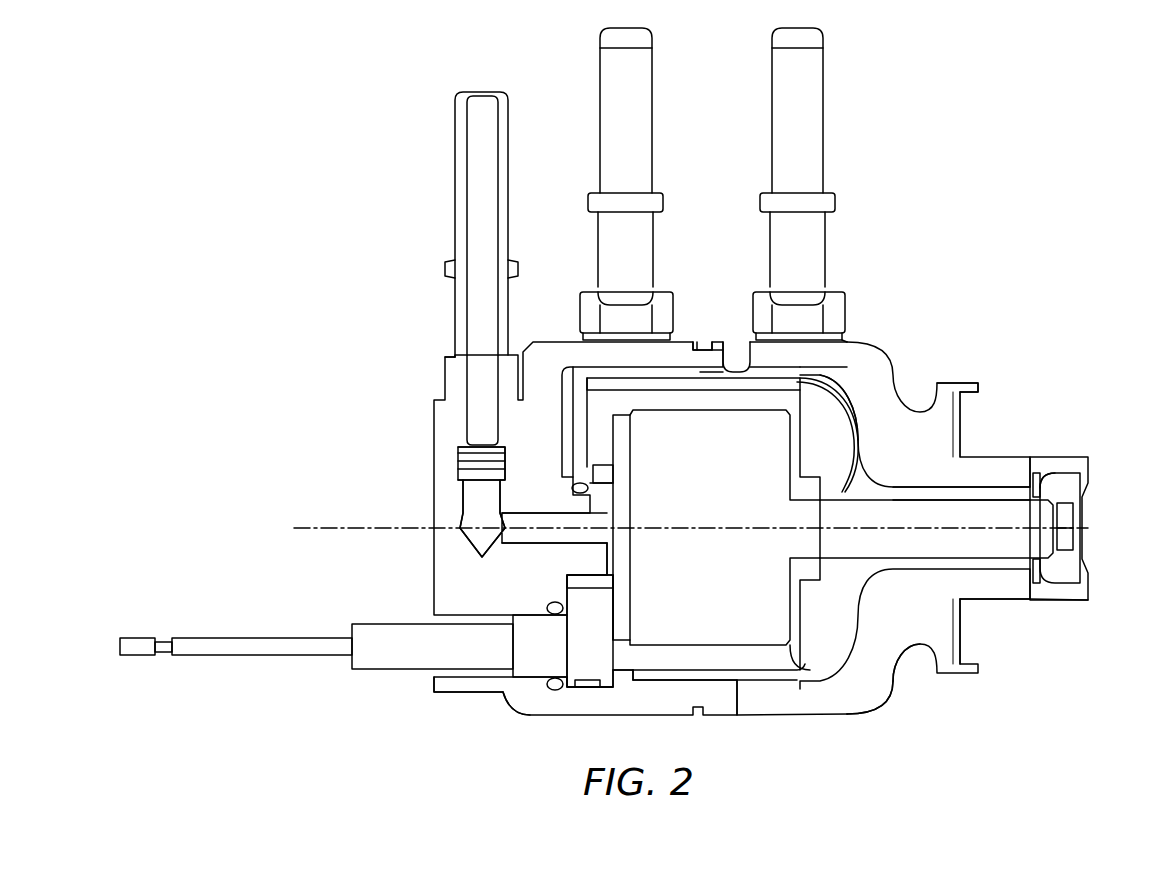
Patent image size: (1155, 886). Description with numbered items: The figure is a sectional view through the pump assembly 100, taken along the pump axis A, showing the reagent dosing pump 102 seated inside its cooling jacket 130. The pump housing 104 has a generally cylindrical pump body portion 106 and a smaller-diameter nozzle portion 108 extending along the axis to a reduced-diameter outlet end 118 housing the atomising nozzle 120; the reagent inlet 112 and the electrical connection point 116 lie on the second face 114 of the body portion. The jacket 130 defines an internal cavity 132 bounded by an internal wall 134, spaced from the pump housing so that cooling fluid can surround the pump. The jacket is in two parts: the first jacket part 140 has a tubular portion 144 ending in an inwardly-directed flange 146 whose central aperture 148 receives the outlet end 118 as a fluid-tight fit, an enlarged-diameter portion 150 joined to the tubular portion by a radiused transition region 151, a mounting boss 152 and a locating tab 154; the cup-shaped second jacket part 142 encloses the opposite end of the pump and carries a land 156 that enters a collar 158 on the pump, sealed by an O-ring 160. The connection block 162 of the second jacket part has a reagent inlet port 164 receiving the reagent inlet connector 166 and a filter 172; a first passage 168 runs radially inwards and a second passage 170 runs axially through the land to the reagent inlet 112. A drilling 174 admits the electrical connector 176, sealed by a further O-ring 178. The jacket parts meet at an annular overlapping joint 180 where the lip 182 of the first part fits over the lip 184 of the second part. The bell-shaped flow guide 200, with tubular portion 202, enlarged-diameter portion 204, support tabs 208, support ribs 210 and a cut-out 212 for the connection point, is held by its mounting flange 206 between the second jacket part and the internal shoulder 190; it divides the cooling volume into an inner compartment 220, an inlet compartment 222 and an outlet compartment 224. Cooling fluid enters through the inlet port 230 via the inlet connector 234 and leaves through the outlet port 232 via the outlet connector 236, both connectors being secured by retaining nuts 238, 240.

The pump assembly 100 is at (336, 182).
The reagent dosing pump 102 is at (830, 683).
The pump housing 104 is at (768, 593).
The pump body portion 106 is at (700, 658).
The nozzle portion 108 is at (987, 562).
The reagent inlet 112 is at (592, 535).
The second face 114 is at (615, 612).
The electrical connection point 116 is at (590, 668).
The outlet end 118 is at (1068, 511).
The atomising nozzle 120 is at (1068, 540).
The jacket 130 is at (915, 388).
The internal cavity 132 is at (862, 690).
The internal wall 134 is at (790, 688).
The first jacket part 140 is at (942, 622).
The second jacket part 142 is at (495, 695).
The tubular portion 144 is at (1020, 592).
The inwardly-directed flange 146 is at (1083, 566).
The central aperture 148 is at (1060, 500).
The enlarged-diameter portion 150 is at (802, 700).
The radiused transition region 151 is at (926, 660).
The mounting boss 152 is at (950, 420).
The locating tab 154 is at (970, 383).
The land 156 is at (595, 552).
The collar 158 is at (615, 470).
The O-ring 160 is at (585, 490).
The connection block 162 is at (422, 520).
The reagent inlet port 164 is at (456, 440).
The reagent inlet connector 166 is at (470, 135).
The first passage 168 is at (475, 500).
The second passage 170 is at (592, 578).
The filter 172 is at (470, 470).
The drilling 174 is at (458, 692).
The electrical connector 176 is at (372, 625).
The O-ring 178 is at (555, 690).
The annular overlapping joint 180 is at (705, 342).
The lip 182 is at (718, 375).
The lip 184 is at (705, 380).
The internal shoulder 190 is at (737, 373).
The flow guide 200 is at (856, 372).
The tubular portion 202 is at (980, 486).
The enlarged-diameter portion 204 is at (752, 686).
The mounting flange 206 is at (727, 680).
The support tabs 208 is at (1036, 478).
The support ribs 210 is at (895, 648).
The cut-out 212 is at (625, 690).
The inner compartment 220 is at (836, 380).
The inlet compartment 222 is at (612, 373).
The outlet compartment 224 is at (795, 418).
The inlet port 230 is at (694, 342).
The outlet port 232 is at (850, 342).
The inlet connector 234 is at (603, 86).
The outlet connector 236 is at (773, 86).
The retaining nut 238 is at (590, 292).
The retaining nut 240 is at (840, 292).